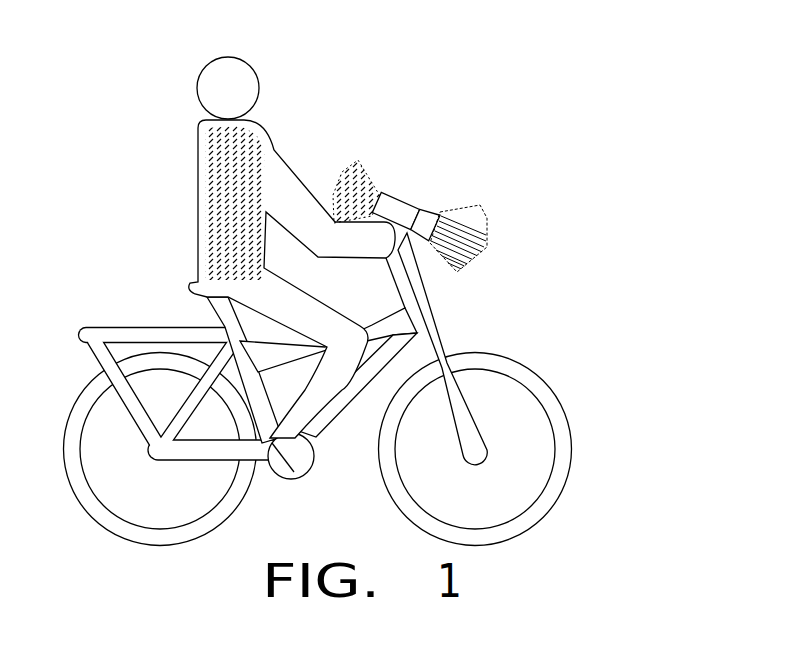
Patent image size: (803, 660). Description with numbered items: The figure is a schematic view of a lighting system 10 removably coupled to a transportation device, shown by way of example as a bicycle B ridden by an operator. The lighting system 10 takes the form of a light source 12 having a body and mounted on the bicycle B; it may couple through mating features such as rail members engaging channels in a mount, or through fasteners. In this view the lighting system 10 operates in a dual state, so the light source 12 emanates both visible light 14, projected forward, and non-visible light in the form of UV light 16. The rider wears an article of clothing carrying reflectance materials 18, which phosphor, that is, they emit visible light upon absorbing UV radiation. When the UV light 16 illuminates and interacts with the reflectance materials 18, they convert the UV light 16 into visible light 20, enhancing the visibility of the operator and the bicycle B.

The lighting system 10 is at (489, 177).
The light source 12 is at (405, 191).
The visible light 14 is at (477, 198).
The UV light 16 is at (368, 164).
The reflectance material 18 is at (267, 247).
The visible light 20 is at (225, 178).
The bicycle B is at (458, 330).